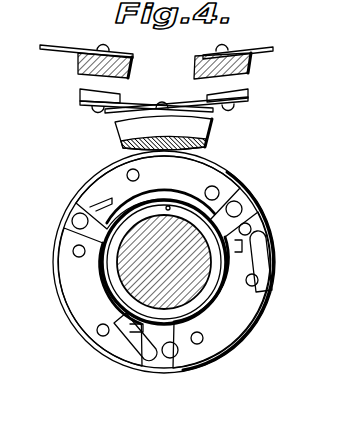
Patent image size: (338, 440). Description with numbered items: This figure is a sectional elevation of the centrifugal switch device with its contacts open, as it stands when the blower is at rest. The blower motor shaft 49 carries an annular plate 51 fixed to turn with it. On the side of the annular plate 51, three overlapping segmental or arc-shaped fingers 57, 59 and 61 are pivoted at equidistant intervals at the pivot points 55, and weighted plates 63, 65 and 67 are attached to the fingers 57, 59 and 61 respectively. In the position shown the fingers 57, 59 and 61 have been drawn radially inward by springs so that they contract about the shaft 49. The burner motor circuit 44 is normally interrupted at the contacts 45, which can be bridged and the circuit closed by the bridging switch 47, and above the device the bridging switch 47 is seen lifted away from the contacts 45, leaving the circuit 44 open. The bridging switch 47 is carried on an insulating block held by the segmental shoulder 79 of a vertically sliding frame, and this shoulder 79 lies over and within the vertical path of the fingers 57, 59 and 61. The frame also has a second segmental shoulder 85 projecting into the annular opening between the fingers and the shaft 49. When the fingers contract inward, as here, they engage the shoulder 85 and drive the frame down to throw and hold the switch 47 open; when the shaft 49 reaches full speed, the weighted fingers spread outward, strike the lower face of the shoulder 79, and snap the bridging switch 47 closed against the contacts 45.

The circuit 44 is at (59, 46).
The contacts 45 is at (79, 68).
The bridging switch 47 is at (135, 108).
The segmental shoulder 79 is at (125, 140).
The segmental finger 59 is at (78, 192).
The segmental finger 57 is at (258, 217).
The weighted plate 63 is at (215, 175).
The weighted plate 65 is at (87, 302).
The weighted plate 67 is at (232, 330).
The segmental finger 61 is at (152, 366).
The pivot point 55 is at (72, 218).
The annular plate 51 is at (213, 287).
The blower motor shaft 49 is at (125, 268).
The second segmental shoulder 85 is at (168, 206).